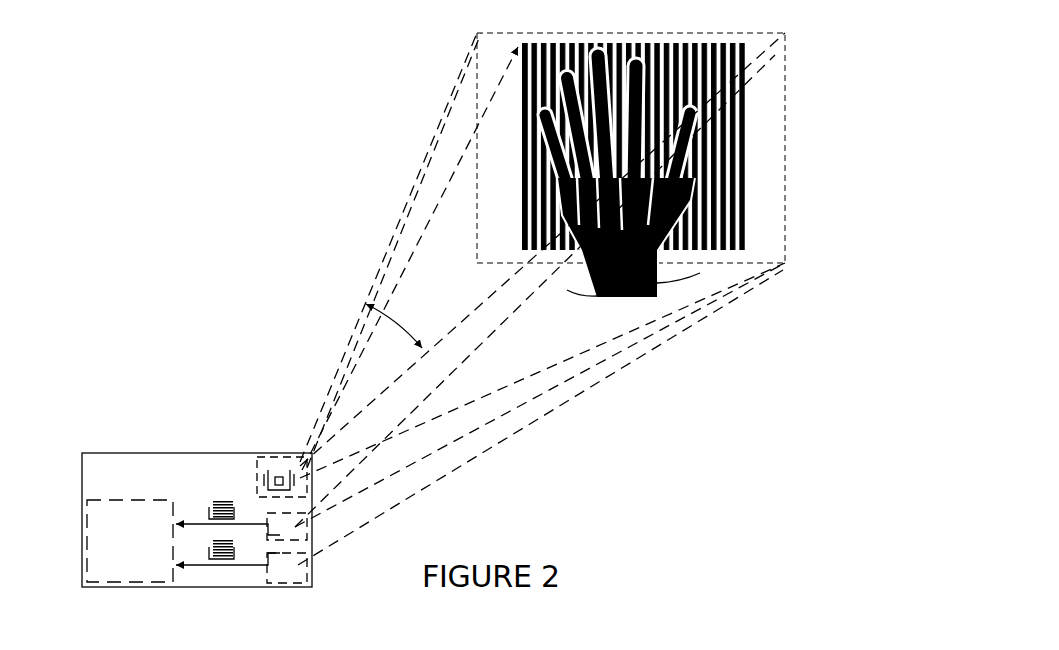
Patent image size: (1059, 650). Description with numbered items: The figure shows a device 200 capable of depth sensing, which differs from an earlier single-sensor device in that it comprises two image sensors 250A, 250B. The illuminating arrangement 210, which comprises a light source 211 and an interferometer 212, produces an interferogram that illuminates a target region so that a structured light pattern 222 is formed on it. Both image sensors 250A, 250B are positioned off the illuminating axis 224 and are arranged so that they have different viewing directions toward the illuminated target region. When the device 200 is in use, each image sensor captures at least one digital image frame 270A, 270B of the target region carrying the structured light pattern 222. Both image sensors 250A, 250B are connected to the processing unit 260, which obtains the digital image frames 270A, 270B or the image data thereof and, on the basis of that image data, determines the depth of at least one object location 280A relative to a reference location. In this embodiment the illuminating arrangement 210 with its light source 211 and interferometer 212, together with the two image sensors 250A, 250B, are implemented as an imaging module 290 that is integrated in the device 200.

The device 200 is at (102, 420).
The illuminating arrangement 210 is at (281, 470).
The light source 211 is at (276, 481).
The interferometer 212 is at (272, 484).
The structured light pattern 222 is at (713, 62).
The illuminating axis 224 is at (549, 230).
The image sensor 250A is at (282, 528).
The image sensor 250B is at (305, 578).
The processing unit 260 is at (167, 578).
The digital image frame 270A is at (222, 498).
The digital image frame 270B is at (224, 560).
The object location 280A is at (595, 265).
The imaging module 290 is at (287, 460).